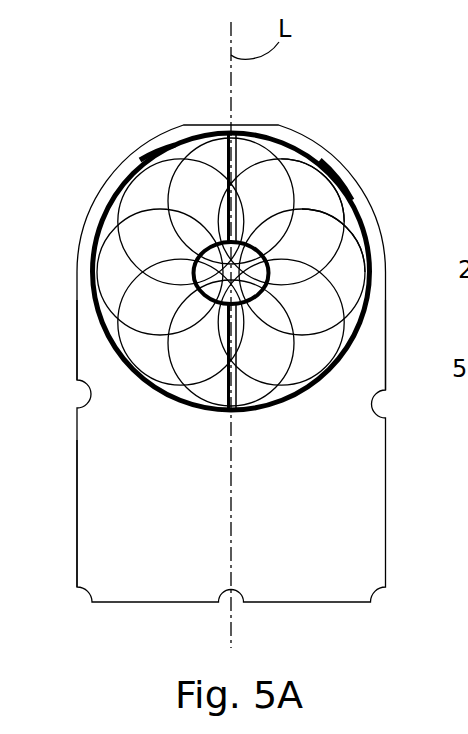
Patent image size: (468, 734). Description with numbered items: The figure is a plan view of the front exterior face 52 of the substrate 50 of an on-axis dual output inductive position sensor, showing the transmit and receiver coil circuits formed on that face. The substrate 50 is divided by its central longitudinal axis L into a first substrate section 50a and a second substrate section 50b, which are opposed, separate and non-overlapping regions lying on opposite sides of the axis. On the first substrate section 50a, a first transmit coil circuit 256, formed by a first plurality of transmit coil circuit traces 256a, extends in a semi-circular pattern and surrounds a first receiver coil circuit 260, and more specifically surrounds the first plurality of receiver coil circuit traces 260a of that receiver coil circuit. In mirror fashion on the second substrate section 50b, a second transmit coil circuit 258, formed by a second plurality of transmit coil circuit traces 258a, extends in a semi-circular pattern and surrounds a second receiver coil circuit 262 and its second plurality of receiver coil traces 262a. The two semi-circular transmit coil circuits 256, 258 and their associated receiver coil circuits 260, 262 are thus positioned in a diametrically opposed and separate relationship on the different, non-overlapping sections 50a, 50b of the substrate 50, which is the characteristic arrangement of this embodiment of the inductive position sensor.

The substrate 50 is at (340, 608).
The first substrate section 50a is at (77, 352).
The second substrate section 50b is at (365, 347).
The front exterior face 52 is at (77, 535).
The first transmit coil circuit 256 is at (124, 172).
The first plurality of transmit coil circuit traces 256a is at (153, 153).
The second transmit coil circuit 258 is at (336, 168).
The second plurality of transmit coil circuit traces 258a is at (345, 205).
The first receiver coil circuit 260 is at (150, 262).
The first plurality of receiver coil circuit traces 260a is at (100, 267).
The second receiver coil circuit 262 is at (307, 258).
The second plurality of receiver coil traces 262a is at (335, 285).